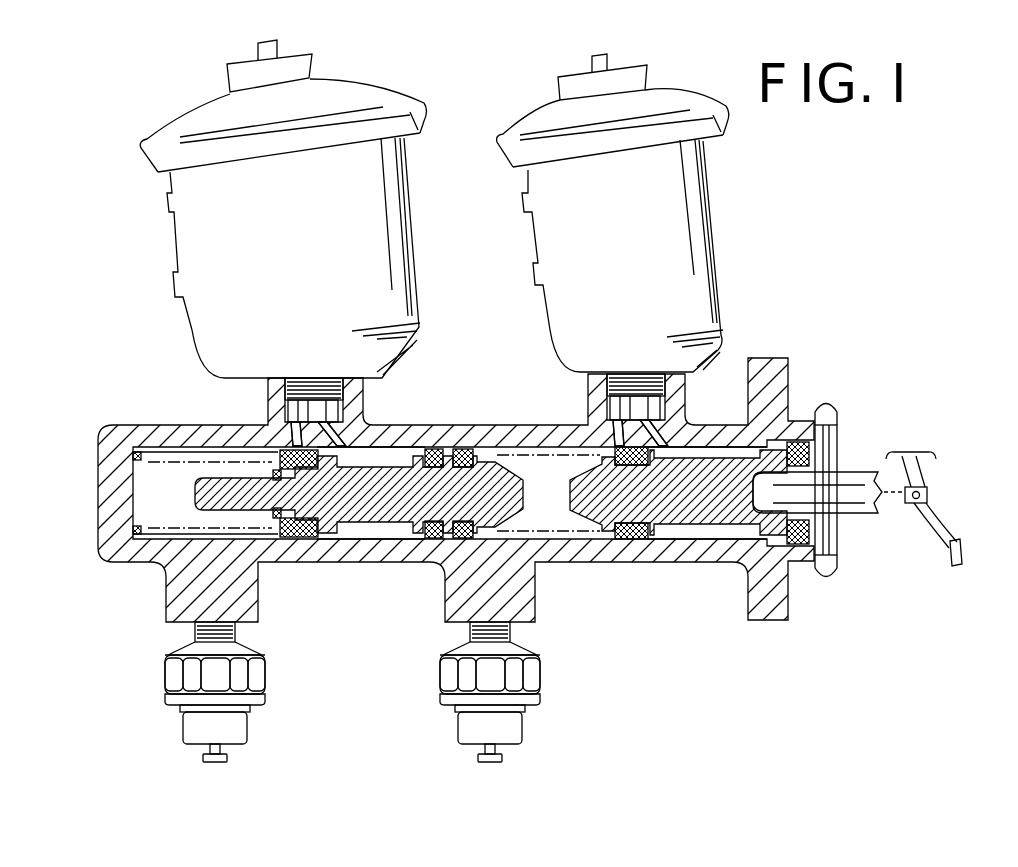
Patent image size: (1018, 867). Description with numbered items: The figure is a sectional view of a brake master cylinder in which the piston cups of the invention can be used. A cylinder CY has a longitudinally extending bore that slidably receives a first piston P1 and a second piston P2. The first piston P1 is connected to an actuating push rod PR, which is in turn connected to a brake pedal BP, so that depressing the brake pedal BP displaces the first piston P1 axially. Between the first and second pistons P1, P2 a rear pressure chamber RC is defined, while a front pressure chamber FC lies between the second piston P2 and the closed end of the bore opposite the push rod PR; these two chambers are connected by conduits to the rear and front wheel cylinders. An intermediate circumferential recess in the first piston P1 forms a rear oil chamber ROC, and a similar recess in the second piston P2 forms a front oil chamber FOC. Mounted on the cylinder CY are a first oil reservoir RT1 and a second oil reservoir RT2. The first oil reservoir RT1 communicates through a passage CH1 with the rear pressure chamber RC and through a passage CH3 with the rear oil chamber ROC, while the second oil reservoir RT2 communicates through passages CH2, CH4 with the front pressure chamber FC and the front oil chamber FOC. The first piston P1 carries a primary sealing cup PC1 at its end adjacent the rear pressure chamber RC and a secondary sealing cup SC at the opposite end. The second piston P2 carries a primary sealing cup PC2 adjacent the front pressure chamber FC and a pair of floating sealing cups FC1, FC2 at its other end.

The first oil reservoir RT1 is at (710, 275).
The second oil reservoir RT2 is at (417, 273).
The cylinder CY is at (603, 552).
The first piston P1 is at (707, 520).
The second piston P2 is at (353, 518).
The primary sealing cup PC1 is at (640, 540).
The primary sealing cup PC2 is at (307, 538).
The floating sealing cup FC1 is at (470, 449).
The floating sealing cup FC2 is at (438, 450).
The front pressure chamber FC is at (152, 518).
The rear pressure chamber RC is at (547, 513).
The front oil chamber FOC is at (397, 537).
The rear oil chamber ROC is at (750, 450).
The passage CH1 is at (620, 433).
The passage CH2 is at (295, 446).
The passage CH3 is at (687, 417).
The passage CH4 is at (348, 440).
The actuating push rod PR is at (851, 477).
The brake pedal BP is at (938, 537).
The secondary sealing cup SC is at (795, 534).